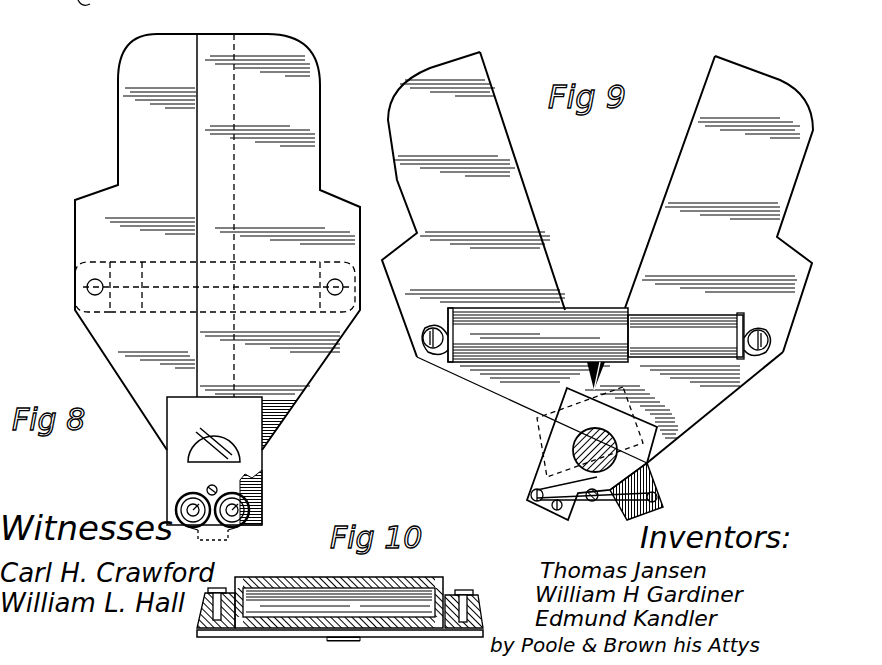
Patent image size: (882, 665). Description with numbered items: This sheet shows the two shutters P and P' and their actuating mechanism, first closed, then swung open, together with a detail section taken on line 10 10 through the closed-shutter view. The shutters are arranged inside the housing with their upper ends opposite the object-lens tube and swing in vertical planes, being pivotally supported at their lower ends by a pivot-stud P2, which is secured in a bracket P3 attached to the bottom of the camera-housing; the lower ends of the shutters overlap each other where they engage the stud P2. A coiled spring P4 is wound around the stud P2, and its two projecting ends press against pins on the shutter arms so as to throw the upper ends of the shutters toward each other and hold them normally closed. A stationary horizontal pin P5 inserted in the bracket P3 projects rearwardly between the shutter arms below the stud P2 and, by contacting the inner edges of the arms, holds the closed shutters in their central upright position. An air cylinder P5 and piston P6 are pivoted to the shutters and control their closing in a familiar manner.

In FIG. 8, the shutter P is at (136, 242).
In FIG. 9, the shutter P is at (719, 259).
In FIG. 10, the shutter P is at (321, 636).
In FIG. 8, the shutter P' is at (278, 242).
In FIG. 9, the shutter P' is at (514, 296).
In FIG. 10, the shutter P' is at (329, 648).
In FIG. 8, the pivot-stud P2 is at (225, 442).
In FIG. 9, the pivot-stud P2 is at (575, 445).
In FIG. 8, the bracket P3 is at (250, 504).
In FIG. 9, the bracket P3 is at (556, 511).
In FIG. 8, the coiled spring P4 is at (190, 527).
In FIG. 9, the coiled spring P4 is at (617, 460).
In FIG. 8, the stationary pin P5 is at (207, 487).
In FIG. 9, the stationary pin P5 is at (720, 352).
In FIG. 10, the stationary pin P5 is at (312, 580).
In FIG. 9, the piston P6 is at (462, 360).
In FIG. 10, the piston P6 is at (245, 595).
In FIG. 8, the section line 10 is at (87, 288).